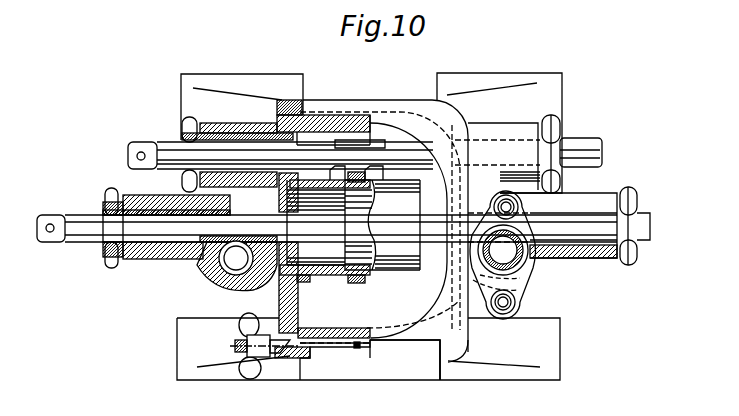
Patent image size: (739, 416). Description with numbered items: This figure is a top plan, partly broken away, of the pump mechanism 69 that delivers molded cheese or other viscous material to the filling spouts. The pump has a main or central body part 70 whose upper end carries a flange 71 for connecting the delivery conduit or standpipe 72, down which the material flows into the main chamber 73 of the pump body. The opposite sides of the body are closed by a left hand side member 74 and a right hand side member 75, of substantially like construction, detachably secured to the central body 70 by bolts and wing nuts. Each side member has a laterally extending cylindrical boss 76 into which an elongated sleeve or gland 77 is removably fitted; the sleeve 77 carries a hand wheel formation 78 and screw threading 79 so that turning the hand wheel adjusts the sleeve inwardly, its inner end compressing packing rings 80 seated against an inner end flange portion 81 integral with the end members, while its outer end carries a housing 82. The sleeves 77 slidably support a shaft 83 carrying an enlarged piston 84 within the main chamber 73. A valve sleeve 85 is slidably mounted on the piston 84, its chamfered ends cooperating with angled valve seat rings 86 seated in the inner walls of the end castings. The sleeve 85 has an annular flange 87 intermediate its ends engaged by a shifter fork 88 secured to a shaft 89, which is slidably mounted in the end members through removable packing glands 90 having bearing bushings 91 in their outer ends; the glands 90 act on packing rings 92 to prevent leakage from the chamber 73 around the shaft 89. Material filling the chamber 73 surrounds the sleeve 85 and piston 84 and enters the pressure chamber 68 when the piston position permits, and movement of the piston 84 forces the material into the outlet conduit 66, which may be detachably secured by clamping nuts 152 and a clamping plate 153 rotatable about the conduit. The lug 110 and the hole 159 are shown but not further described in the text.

The conduit 66 is at (519, 242).
The pressure chamber 68 is at (480, 193).
The pump mechanism 69 is at (355, 349).
The main or central body part 70 is at (338, 350).
The flange 71 is at (413, 342).
The delivery conduit or standpipe 72 is at (300, 307).
The main chamber 73 is at (325, 340).
The side member 74 is at (330, 328).
The side member 75 is at (493, 345).
The cylindrical boss 76 is at (160, 260).
The sleeve or gland 77 is at (173, 196).
The hand wheel formation 78 is at (111, 189).
The screw threading 79 is at (124, 258).
The packing rings 80 is at (201, 250).
The inner end flange portion 81 is at (237, 254).
The housing 82 is at (104, 241).
The shaft 83 is at (91, 216).
The piston 84 is at (345, 250).
The sleeve 85 is at (394, 271).
The valve seat rings 86 is at (299, 279).
The annular flange 87 is at (358, 283).
The shifter fork 88 is at (372, 169).
The shaft 89 is at (357, 143).
The packing glands 90 is at (233, 138).
The bearing bushings 91 is at (182, 140).
The packing rings 92 is at (283, 147).
The lug 110 is at (230, 266).
The wing nuts or bolts 152 is at (520, 209).
The clamping plate 153 is at (512, 284).
The bolt hole 159 is at (517, 301).